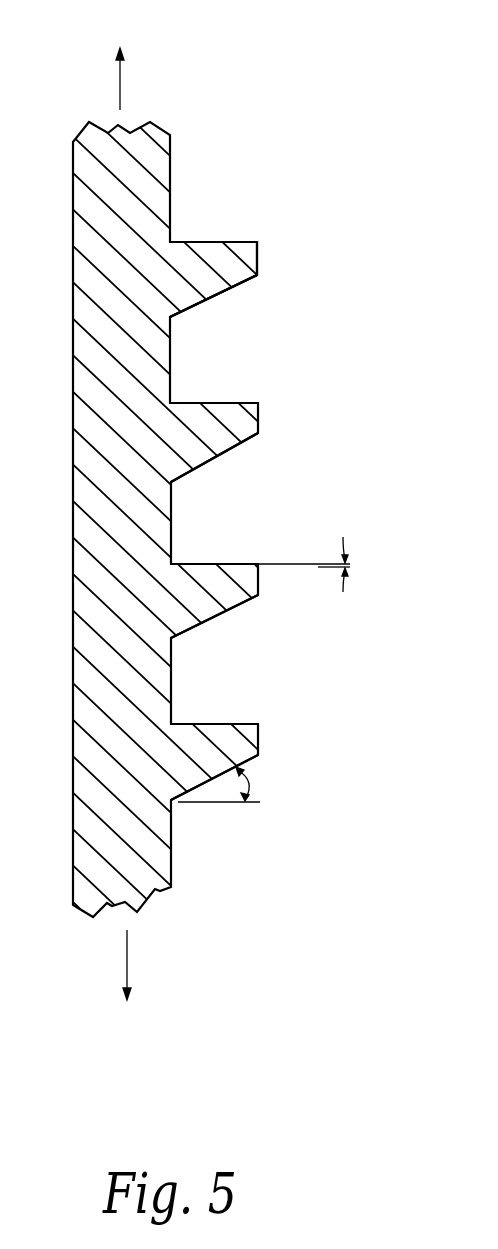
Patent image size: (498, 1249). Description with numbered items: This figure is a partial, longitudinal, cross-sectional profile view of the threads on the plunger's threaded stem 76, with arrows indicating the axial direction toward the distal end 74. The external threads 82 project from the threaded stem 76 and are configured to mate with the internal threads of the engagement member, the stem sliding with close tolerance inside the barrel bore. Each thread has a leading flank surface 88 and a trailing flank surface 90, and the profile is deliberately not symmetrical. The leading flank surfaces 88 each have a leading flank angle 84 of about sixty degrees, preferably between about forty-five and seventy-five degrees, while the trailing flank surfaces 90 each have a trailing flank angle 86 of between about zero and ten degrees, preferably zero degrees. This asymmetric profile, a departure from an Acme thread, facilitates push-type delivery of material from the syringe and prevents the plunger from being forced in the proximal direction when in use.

The distal end 74 is at (124, 525).
The threaded stem 76 is at (346, 420).
The external threads 82 is at (232, 271).
The leading flank angle 84 is at (248, 783).
The trailing flank angle 86 is at (304, 586).
The leading flank surfaces 88 is at (223, 293).
The trailing flank surfaces 90 is at (187, 242).